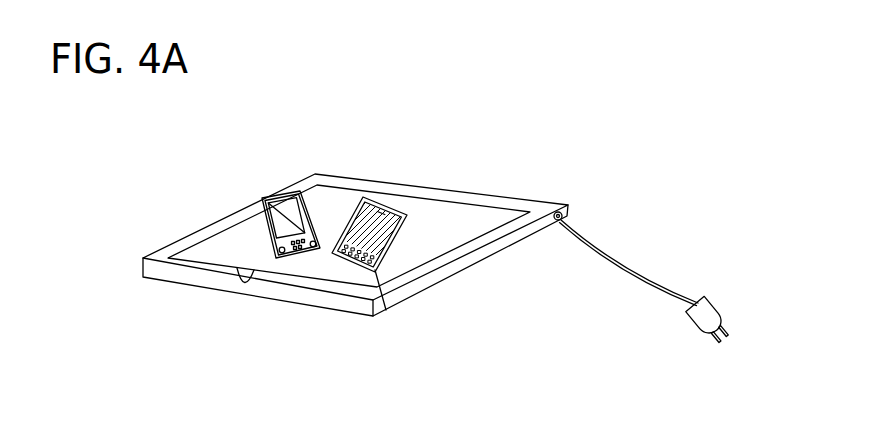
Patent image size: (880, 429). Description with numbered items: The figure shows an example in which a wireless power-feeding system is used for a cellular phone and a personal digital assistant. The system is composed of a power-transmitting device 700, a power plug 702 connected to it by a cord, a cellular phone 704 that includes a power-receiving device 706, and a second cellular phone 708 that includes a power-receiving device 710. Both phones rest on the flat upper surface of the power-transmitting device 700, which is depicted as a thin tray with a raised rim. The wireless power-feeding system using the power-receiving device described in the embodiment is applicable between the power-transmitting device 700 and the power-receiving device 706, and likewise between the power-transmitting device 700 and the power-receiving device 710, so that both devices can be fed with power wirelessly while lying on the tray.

The power-transmitting device 700 is at (320, 306).
The power plug 702 is at (704, 316).
The cellular phone 704 is at (278, 194).
The power-receiving device 706 is at (273, 252).
The cellular phone 708 is at (366, 196).
The power-receiving device 710 is at (380, 272).